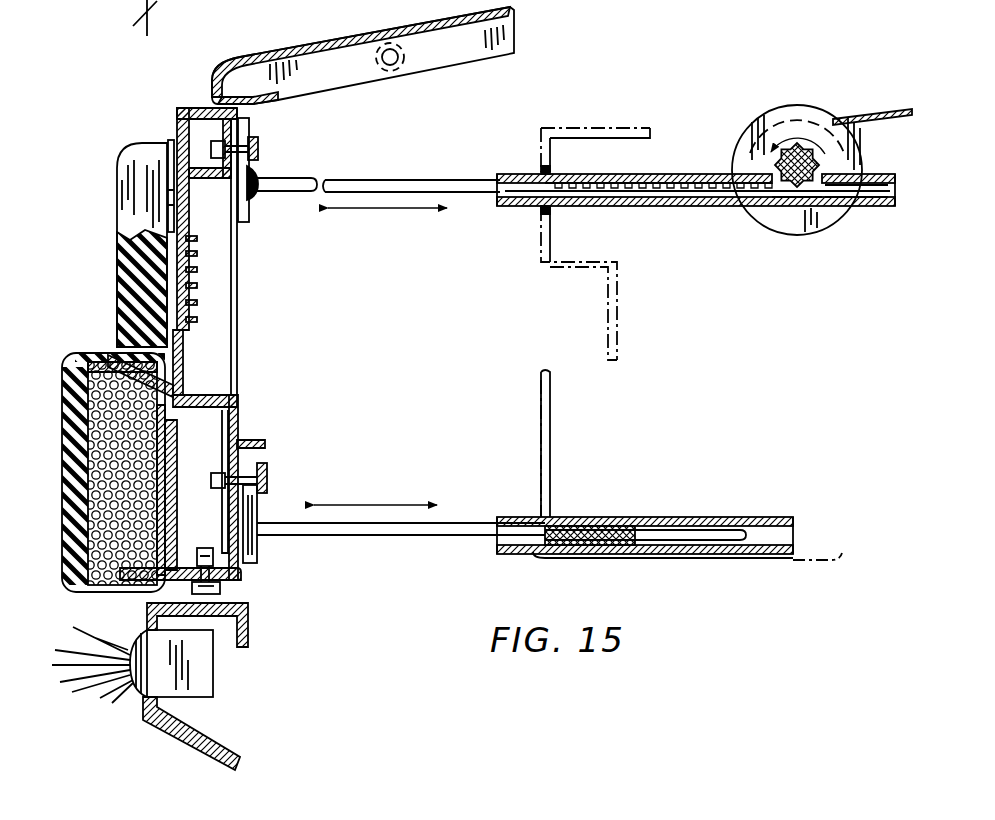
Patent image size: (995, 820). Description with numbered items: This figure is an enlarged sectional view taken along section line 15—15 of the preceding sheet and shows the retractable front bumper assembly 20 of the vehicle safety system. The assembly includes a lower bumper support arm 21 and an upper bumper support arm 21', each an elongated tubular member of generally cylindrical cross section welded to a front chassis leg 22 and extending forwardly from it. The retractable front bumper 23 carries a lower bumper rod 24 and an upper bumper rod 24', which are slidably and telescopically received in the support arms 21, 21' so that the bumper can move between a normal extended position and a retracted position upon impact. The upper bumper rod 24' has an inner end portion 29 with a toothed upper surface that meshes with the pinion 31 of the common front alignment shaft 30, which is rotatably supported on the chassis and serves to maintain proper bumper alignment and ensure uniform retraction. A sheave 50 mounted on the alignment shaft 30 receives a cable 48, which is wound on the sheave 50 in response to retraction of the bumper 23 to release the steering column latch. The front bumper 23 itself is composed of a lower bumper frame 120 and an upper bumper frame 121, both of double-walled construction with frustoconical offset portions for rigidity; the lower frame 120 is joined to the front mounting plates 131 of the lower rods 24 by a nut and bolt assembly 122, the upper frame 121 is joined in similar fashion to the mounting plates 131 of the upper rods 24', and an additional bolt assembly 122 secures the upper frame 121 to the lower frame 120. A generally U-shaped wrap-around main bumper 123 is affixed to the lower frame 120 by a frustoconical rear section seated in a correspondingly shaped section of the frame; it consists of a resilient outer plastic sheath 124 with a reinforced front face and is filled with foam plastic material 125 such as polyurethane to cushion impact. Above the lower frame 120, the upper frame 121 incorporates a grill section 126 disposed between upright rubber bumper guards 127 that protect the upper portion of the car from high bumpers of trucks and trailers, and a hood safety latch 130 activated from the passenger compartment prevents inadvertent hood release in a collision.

The section line 15 is at (160, 12).
The retractable front bumper assembly 20 is at (303, 481).
The lower bumper support arm 21 is at (669, 526).
The upper bumper support arm 21' is at (696, 217).
The front chassis leg 22 is at (613, 100).
The retractable front bumper 23 is at (246, 352).
The lower bumper rod 24 is at (401, 508).
The upper bumper rod 24' is at (569, 179).
The inner end portion 29 is at (716, 206).
The front alignment shaft 30 is at (800, 207).
The pinion 31 is at (820, 158).
The cable 48 is at (882, 112).
The sheave 50 is at (754, 115).
The lower bumper frame 120 is at (234, 575).
The upper bumper frame 121 is at (205, 108).
The nut and bolt assembly 122 is at (258, 150).
The main bumper 123 is at (58, 392).
The outer plastic sheath 124 is at (70, 452).
The foam plastic material 125 is at (98, 497).
The grill section 126 is at (197, 258).
The bumper guard 127 is at (150, 148).
The hood safety latch 130 is at (398, 66).
The front mounting plate 131 is at (250, 206).